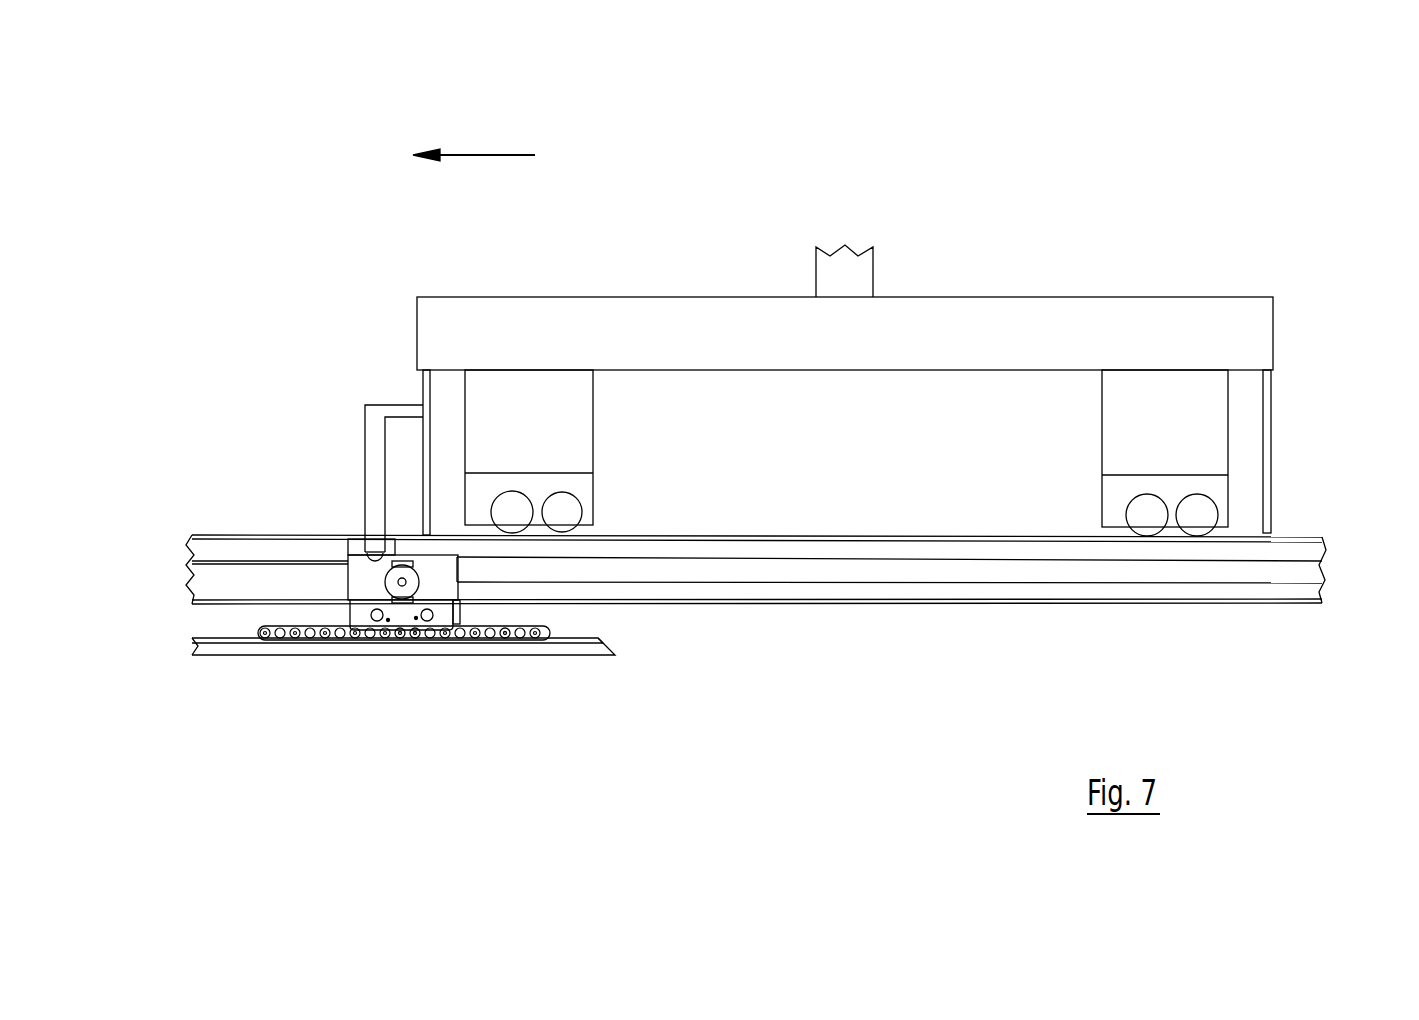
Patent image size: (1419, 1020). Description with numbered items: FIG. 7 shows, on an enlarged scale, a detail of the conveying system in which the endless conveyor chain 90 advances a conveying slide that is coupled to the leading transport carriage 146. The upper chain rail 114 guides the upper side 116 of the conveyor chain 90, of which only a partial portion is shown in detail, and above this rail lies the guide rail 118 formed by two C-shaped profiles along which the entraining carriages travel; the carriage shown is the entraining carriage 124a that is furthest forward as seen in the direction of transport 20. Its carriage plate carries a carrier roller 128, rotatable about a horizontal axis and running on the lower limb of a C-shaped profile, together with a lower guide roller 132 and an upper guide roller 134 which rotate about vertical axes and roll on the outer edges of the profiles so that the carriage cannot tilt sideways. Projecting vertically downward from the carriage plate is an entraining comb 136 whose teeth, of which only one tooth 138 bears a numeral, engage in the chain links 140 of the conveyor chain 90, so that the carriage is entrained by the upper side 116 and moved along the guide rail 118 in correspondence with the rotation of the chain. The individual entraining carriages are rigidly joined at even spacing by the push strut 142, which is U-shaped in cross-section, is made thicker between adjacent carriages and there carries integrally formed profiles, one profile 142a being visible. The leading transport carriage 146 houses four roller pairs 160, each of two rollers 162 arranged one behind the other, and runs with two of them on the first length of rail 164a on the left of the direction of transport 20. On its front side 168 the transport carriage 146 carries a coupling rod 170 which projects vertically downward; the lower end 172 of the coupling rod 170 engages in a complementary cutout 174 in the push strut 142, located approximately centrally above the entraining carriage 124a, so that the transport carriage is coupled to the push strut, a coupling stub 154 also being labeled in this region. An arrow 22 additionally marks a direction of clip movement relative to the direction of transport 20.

The direction of transport 20 is at (483, 155).
The film web / direction of clip movement 22 is at (295, 668).
The conveyor chain 90 is at (537, 627).
The upper chain rail 114 is at (590, 655).
The upper side of the conveyor chain 116 is at (503, 643).
The guide rail 118 is at (933, 593).
The entraining carriage 124a is at (357, 572).
The carrier roller 128 is at (456, 630).
The lower guide roller 132 is at (397, 640).
The upper guide roller 134 is at (407, 588).
The entraining comb 136 is at (365, 622).
The tooth 138 is at (418, 640).
The chain link 140 is at (272, 640).
The push strut 142 is at (1308, 553).
The profile 142a is at (1232, 577).
The leading transport carriage 146 is at (1093, 280).
The coupling stub 154 is at (877, 278).
The roller pair 160 is at (505, 487).
The roller 162 is at (516, 503).
The first length of rail 164a is at (1303, 537).
The front side 168 is at (420, 325).
The coupling rod 170 is at (378, 450).
The lower end 172 is at (385, 530).
The cutout 174 is at (362, 557).